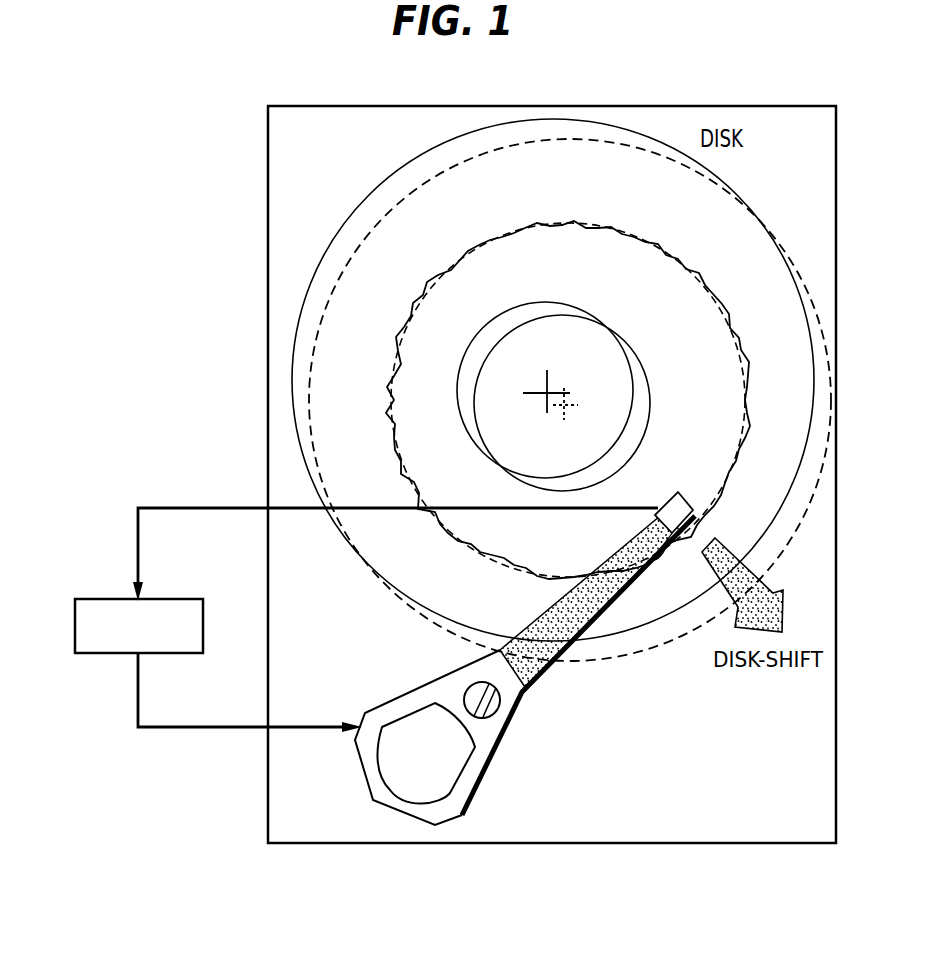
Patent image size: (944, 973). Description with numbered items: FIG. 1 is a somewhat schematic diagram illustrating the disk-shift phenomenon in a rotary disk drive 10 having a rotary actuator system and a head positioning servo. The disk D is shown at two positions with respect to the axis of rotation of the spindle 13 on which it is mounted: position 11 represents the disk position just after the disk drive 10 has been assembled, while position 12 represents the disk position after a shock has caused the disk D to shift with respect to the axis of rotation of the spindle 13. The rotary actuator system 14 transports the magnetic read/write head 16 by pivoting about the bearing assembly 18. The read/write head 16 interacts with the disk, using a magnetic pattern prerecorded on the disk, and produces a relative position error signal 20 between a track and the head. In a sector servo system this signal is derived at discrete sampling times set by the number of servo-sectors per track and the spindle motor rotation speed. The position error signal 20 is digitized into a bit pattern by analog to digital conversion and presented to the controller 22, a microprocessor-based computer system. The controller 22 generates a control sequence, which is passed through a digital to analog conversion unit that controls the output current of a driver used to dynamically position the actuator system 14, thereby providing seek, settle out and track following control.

The rotary disk drive 10 is at (836, 148).
The disk position after assembly 11 is at (365, 197).
The shifted disk position 12 is at (393, 209).
The spindle 13 is at (547, 380).
The rotary actuator system 14 is at (525, 673).
The magnetic read/write head 16 is at (680, 492).
The bearing assembly 18 is at (500, 705).
The position error signal 20 is at (138, 557).
The controller 22 is at (75, 628).
The disk D is at (748, 202).